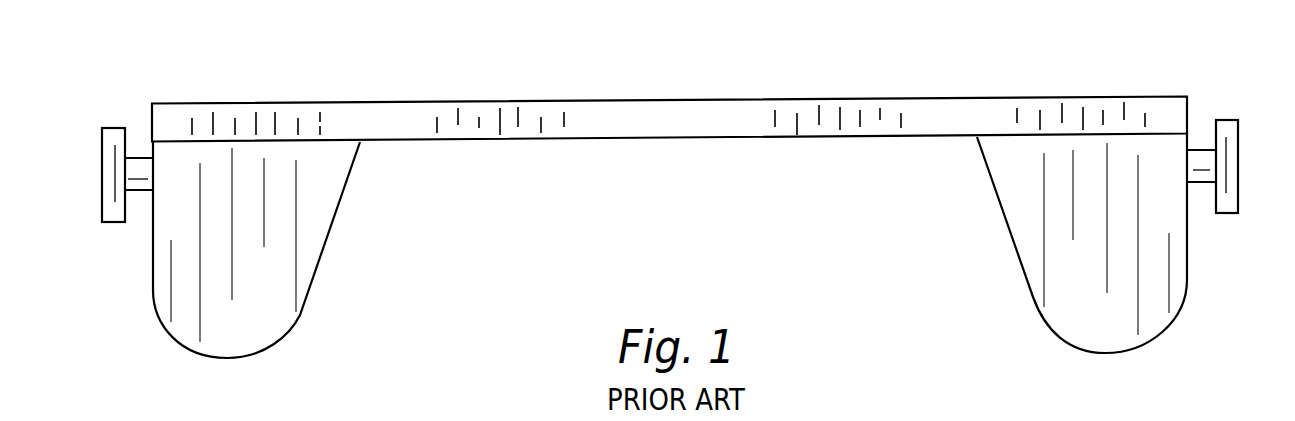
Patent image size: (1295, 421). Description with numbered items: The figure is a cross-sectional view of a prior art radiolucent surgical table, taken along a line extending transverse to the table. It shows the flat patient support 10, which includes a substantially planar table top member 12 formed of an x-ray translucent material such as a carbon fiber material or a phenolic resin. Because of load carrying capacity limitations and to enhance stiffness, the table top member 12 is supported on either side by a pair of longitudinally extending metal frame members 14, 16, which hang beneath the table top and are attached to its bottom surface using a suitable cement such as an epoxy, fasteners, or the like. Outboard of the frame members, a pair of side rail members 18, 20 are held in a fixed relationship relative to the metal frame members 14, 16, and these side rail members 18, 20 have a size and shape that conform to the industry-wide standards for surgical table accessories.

The flat patient support 10 is at (668, 90).
The table top member 12 is at (737, 107).
The metal frame member 14 is at (283, 265).
The metal frame member 16 is at (1072, 263).
The side rail member 18 is at (107, 167).
The side rail member 20 is at (1240, 157).